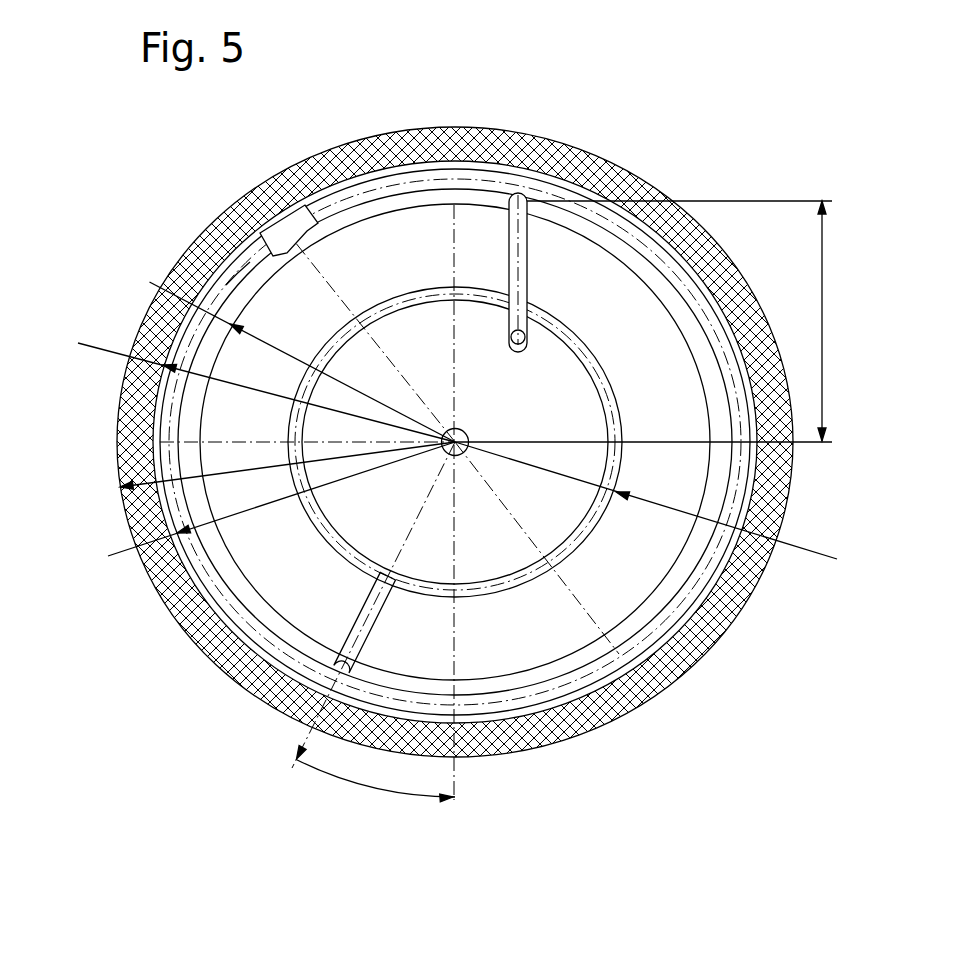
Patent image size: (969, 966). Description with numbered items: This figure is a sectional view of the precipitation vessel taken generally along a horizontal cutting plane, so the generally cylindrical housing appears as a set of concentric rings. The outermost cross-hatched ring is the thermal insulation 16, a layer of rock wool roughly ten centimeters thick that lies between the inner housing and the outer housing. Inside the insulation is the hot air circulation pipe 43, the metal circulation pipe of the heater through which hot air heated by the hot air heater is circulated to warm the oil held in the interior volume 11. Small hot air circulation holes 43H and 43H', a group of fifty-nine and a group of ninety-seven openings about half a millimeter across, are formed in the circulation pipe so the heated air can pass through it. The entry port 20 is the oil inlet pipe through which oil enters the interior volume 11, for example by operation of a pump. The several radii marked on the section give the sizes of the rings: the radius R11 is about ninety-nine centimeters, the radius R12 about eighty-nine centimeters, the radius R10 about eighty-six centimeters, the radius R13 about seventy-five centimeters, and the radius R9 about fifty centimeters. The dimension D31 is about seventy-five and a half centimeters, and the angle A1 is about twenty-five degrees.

The interior volume 11 is at (540, 633).
The thermal insulation 16 is at (633, 693).
The entry port 20 is at (528, 245).
The metal circulation pipe 43 is at (642, 643).
The hot air circulation hole 43H is at (531, 381).
The hot air circulation hole 43H' is at (172, 245).
The dimension D31 is at (822, 237).
The angle A1 is at (372, 792).
The radius R9 is at (797, 557).
The radius R10 is at (108, 556).
The radius R11 is at (120, 487).
The radius R12 is at (258, 374).
The radius R13 is at (150, 282).